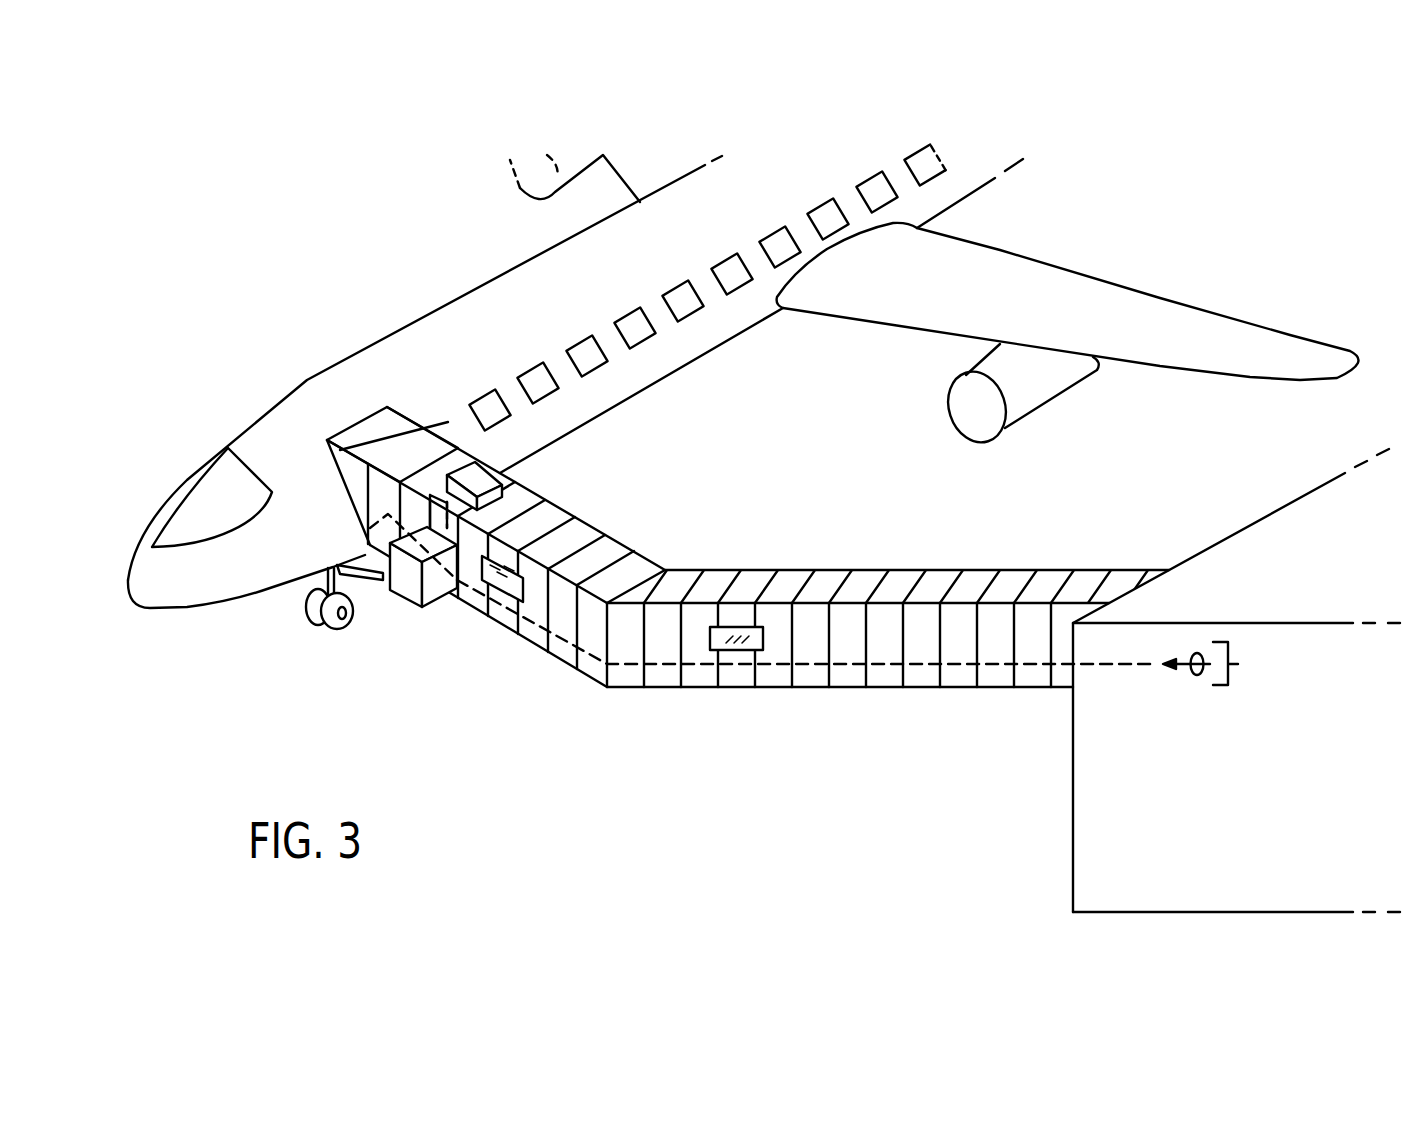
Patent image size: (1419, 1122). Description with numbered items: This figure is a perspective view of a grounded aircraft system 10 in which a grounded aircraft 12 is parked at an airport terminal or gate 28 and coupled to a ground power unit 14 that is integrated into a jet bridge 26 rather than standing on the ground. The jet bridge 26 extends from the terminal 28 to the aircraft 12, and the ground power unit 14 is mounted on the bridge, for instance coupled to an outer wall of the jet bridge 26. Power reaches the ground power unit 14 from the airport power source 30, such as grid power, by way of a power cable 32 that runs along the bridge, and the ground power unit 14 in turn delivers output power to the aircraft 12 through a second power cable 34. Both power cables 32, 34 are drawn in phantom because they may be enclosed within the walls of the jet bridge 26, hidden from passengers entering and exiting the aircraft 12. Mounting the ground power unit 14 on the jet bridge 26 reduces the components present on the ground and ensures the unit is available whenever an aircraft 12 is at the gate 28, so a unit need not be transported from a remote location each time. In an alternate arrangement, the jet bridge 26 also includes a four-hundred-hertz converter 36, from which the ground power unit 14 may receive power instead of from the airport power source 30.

The grounded aircraft system 10 is at (743, 386).
The grounded aircraft 12 is at (312, 378).
The ground power unit 14 is at (403, 598).
The jet bridge 26 is at (652, 562).
The airport terminal or gate 28 is at (1073, 765).
The airport power source 30 is at (1203, 706).
The power cable 32 is at (697, 667).
The power cable 34 is at (370, 533).
The 400 hertz converter 36 is at (497, 487).